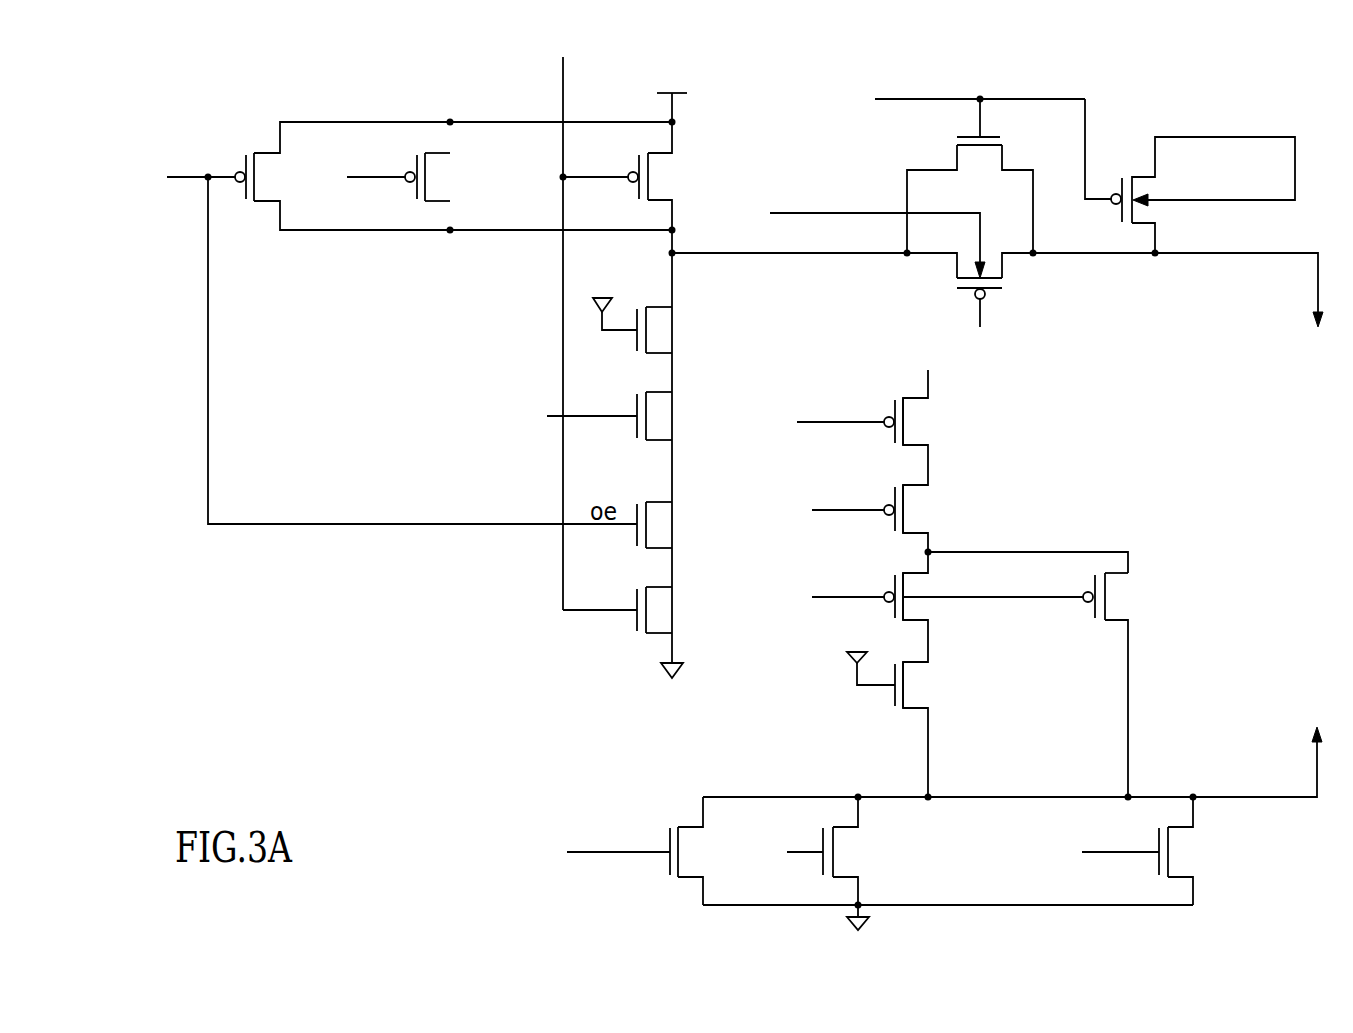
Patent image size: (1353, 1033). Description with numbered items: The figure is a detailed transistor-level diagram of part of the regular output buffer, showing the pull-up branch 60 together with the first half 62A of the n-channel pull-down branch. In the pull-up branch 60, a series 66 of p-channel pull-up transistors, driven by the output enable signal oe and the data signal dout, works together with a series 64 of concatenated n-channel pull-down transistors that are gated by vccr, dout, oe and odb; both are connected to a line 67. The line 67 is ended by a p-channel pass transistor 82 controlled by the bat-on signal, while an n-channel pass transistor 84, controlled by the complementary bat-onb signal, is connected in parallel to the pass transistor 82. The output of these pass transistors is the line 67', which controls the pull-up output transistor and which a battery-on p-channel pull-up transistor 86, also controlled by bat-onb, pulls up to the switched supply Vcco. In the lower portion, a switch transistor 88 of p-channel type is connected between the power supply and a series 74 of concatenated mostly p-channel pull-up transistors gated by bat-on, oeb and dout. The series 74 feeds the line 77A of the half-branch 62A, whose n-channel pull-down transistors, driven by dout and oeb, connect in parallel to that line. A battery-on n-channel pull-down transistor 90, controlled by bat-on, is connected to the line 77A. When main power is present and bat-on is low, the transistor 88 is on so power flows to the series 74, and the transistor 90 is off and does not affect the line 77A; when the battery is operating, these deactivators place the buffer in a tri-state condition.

The branch 60 is at (284, 82).
The series of p-channel pull-up transistors 66 is at (336, 232).
The series of concatenated n-channel pull-down transistors 64 is at (603, 677).
The line 67 is at (791, 277).
The line 67' is at (1179, 305).
The pass transistor 82 is at (992, 263).
The pass transistor 84 is at (975, 161).
The battery on pull-up transistor 86 is at (1146, 209).
The series of concatenated mostly p-channel pull-up transistors 74 is at (1074, 386).
The switch transistor 88 is at (928, 424).
The line 77A is at (1025, 799).
The first half of n-channel branch 62A is at (605, 887).
The battery-on pull-down transistor 90 is at (1186, 853).